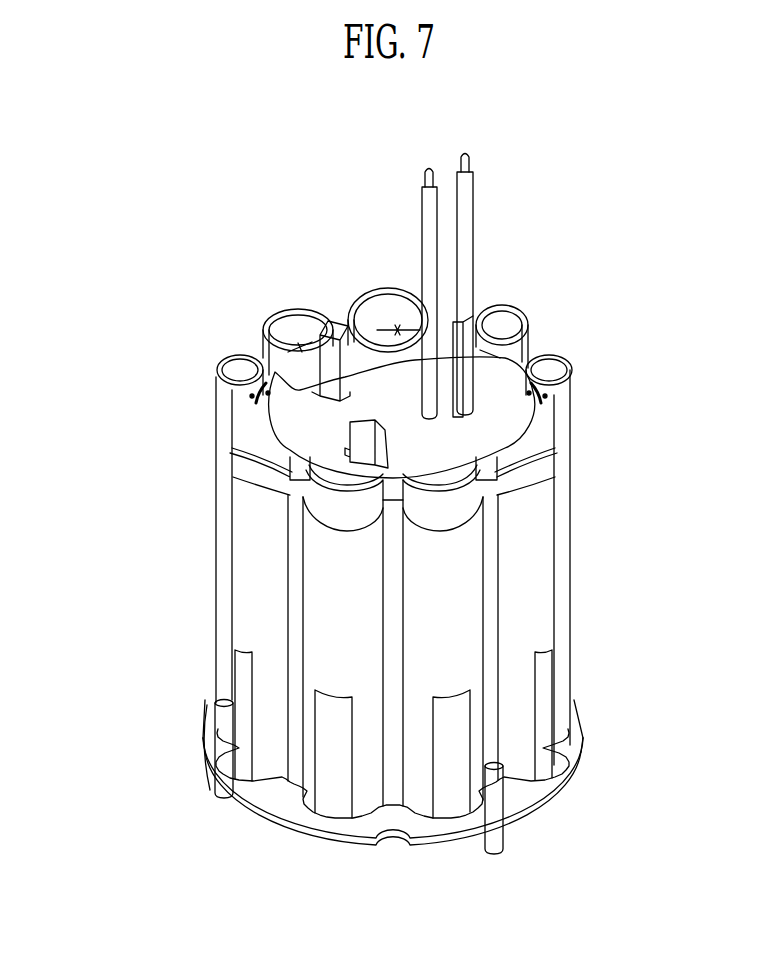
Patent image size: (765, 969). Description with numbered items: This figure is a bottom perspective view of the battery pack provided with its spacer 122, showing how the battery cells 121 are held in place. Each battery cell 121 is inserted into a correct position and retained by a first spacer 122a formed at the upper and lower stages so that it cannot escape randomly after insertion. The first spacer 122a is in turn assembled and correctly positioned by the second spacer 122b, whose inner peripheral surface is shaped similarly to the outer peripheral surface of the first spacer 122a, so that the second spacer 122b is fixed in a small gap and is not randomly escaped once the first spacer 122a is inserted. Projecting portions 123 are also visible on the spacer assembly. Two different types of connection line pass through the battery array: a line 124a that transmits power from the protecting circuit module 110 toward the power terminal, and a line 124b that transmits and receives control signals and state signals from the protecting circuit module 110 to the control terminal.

The protecting circuit module 110 is at (570, 750).
The battery cell 121 is at (247, 687).
The spacer 122 is at (305, 569).
The first spacer 122a is at (220, 548).
The second spacer 122b is at (330, 426).
The hook tab 123 is at (247, 353).
The line 124a is at (468, 242).
The line 124b is at (427, 228).